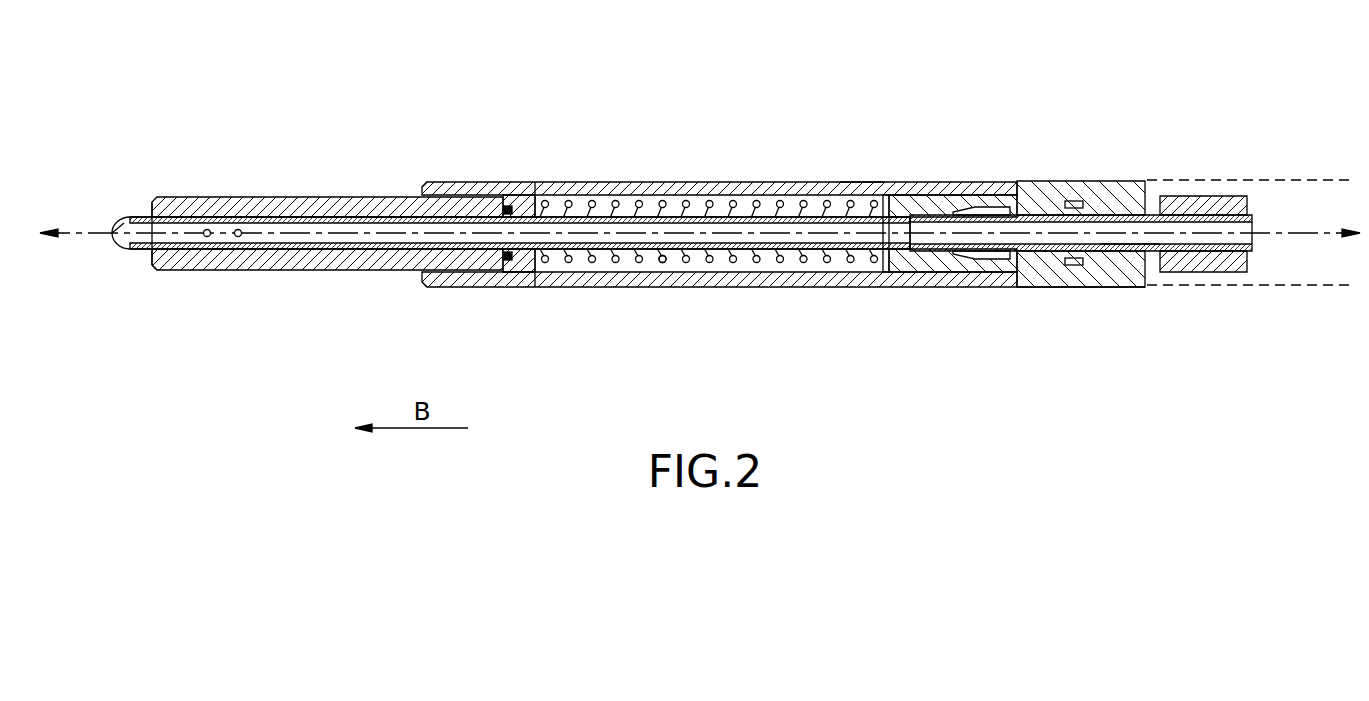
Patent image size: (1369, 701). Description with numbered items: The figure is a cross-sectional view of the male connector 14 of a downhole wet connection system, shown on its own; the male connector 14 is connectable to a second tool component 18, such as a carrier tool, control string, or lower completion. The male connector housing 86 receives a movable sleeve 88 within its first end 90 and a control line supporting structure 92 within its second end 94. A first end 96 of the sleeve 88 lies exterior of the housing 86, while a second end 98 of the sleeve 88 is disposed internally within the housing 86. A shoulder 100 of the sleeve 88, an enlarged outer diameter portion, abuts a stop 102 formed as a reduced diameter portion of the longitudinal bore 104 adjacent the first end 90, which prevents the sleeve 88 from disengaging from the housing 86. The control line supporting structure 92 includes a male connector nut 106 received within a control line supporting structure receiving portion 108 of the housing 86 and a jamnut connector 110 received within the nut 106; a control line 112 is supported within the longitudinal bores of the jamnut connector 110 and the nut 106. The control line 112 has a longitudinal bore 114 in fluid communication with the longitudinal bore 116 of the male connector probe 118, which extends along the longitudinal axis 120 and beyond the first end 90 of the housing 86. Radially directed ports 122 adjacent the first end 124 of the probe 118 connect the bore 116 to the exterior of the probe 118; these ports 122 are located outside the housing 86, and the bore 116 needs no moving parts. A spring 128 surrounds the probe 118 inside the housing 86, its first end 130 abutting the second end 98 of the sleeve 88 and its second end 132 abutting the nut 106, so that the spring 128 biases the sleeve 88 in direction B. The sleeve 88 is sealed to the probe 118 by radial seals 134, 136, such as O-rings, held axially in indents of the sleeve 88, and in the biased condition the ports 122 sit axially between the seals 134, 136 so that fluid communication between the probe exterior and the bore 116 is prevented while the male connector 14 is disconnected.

The male connector 14 is at (863, 181).
The second tool component 18 is at (1247, 290).
The male connector housing 86 is at (740, 168).
The movable sleeve 88 is at (296, 186).
The first end 90 is at (443, 182).
The control line supporting structure 92 is at (1088, 180).
The second end 94 is at (1010, 192).
The first end 96 is at (152, 197).
The second end 98 is at (540, 195).
The shoulder 100 is at (510, 272).
The stop 102 is at (478, 195).
The longitudinal bore 104 is at (650, 185).
The male connector nut 106 is at (1042, 298).
The control line supporting structure receiving portion 108 is at (933, 192).
The jamnut connector 110 is at (1190, 188).
The control line 112 is at (1022, 198).
The longitudinal bore 114 is at (1135, 242).
The longitudinal bore 116 is at (862, 240).
The male connector probe 118 is at (297, 250).
The longitudinal axis 120 is at (90, 200).
The radially directed ports 122 is at (237, 250).
The first end 124 is at (120, 252).
The spring 128 is at (677, 277).
The first end 130 is at (545, 262).
The second end 132 is at (884, 190).
The radial seal 134 is at (174, 272).
The radial seal 136 is at (516, 187).